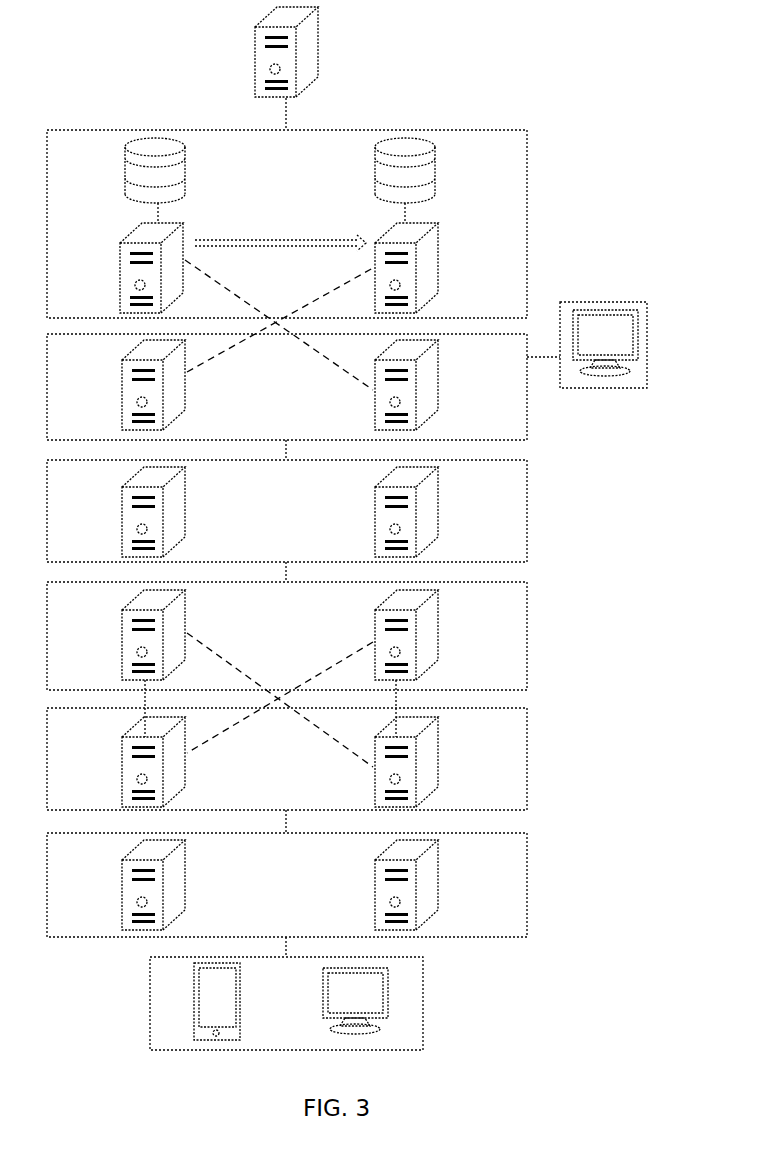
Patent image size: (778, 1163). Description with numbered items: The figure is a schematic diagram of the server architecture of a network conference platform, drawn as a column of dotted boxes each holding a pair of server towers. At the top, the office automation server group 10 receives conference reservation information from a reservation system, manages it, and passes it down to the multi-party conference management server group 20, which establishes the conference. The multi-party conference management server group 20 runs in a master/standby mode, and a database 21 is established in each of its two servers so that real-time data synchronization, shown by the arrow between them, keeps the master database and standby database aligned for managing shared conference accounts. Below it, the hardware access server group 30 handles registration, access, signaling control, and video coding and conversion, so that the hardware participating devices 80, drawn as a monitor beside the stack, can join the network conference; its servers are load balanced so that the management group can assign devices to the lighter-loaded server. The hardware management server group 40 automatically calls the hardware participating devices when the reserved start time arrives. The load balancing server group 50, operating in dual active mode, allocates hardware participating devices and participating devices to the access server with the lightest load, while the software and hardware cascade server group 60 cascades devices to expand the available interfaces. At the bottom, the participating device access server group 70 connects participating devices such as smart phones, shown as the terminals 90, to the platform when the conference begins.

The office automation server group 10 is at (327, 52).
The multi-party conference management server group 20 is at (313, 224).
The database 21 is at (122, 181).
The hardware access server group 30 is at (528, 437).
The hardware management server group 40 is at (528, 510).
The load balancing server group 50 is at (528, 652).
The software and hardware cascade server group 60 is at (528, 760).
The participating device access server group 70 is at (528, 882).
The hardware participating devices 80 is at (580, 301).
The user terminal 90 is at (424, 1008).